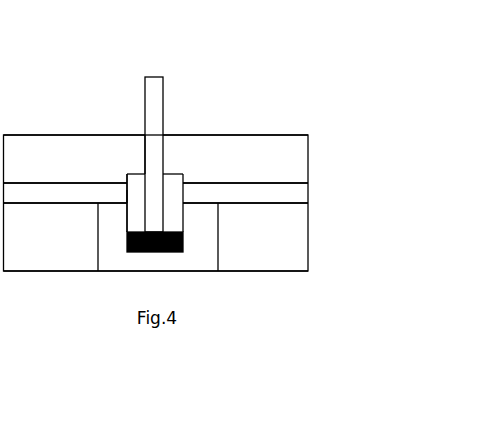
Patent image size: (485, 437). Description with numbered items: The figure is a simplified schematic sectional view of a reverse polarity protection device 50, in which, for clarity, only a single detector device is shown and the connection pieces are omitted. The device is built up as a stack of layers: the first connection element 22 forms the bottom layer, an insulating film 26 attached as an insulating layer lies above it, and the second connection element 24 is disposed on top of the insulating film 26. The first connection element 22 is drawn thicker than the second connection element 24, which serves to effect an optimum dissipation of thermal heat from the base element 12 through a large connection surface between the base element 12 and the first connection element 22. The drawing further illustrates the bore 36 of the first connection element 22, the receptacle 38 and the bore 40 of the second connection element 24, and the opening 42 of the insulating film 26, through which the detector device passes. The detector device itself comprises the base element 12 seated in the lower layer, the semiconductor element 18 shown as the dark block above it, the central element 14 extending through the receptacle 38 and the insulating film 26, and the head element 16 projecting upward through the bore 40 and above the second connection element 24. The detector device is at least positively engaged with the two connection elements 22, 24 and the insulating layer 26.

The reverse polarity protection device 50 is at (63, 53).
The head element 16 is at (158, 87).
The central element 14 is at (168, 185).
The opening 42 is at (127, 188).
The receptacle 38 is at (128, 197).
The bore 40 is at (145, 152).
The second connection element 24 is at (298, 155).
The insulating film 26 is at (298, 193).
The first connection element 22 is at (298, 233).
The bore 36 is at (98, 240).
The semiconductor element 18 is at (153, 248).
The base element 12 is at (193, 247).